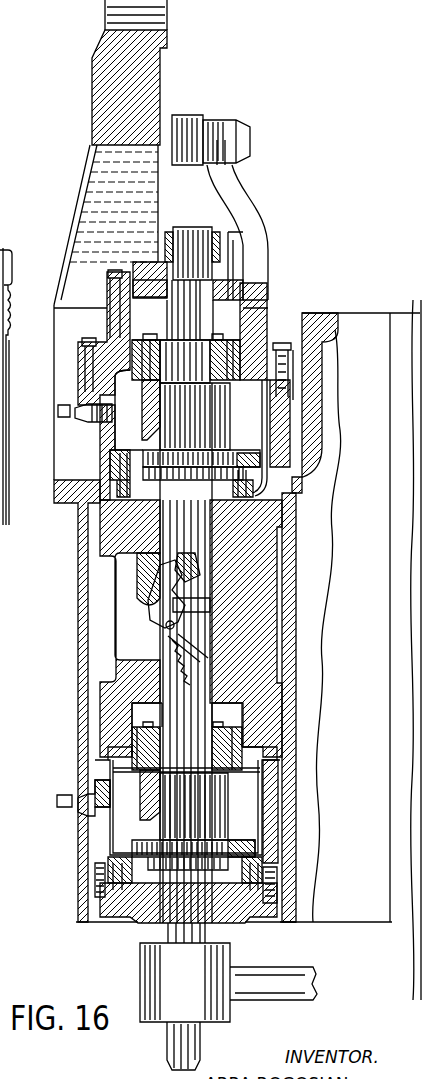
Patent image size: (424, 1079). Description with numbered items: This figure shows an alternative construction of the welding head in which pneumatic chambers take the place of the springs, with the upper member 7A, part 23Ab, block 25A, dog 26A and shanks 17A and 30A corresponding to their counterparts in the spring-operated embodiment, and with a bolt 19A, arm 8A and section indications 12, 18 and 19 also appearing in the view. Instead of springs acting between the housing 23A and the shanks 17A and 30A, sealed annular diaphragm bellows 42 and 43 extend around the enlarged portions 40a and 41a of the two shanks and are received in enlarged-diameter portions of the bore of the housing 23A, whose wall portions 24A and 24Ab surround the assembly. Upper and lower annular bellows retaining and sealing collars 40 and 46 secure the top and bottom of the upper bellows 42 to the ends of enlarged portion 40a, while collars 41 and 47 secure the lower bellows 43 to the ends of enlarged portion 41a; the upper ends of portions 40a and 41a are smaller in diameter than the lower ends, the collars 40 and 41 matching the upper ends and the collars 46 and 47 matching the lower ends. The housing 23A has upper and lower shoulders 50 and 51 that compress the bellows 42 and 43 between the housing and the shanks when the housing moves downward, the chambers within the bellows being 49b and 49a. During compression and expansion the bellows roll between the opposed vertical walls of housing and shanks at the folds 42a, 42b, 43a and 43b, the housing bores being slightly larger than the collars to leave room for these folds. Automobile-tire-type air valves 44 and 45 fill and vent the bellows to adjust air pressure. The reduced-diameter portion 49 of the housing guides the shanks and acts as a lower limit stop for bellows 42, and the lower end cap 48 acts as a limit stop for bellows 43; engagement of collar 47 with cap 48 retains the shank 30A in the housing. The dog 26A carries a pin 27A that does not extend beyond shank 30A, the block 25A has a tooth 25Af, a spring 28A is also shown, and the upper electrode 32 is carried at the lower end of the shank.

The part 7A (counterpart of part 7) 7A is at (148, 78).
The bolt 19A is at (195, 117).
The arm 8A is at (215, 237).
The part 23Ab (counterpart of part 23b) 23Ab is at (258, 233).
The shank 17A is at (230, 277).
The upper annular bellows retaining and sealing collar 40 is at (247, 322).
The upper annular fold 42a is at (262, 340).
The upper shoulder 50 is at (253, 365).
The chamber within the upper bellows 49b is at (250, 400).
The sealed annular diaphragm bellows 42 is at (250, 412).
The enlarged portion of shank 17A 40a is at (203, 430).
The lower annular fold 42b is at (263, 453).
The lower annular bellows retaining and sealing collar 46 is at (333, 485).
The air valve 44 is at (62, 415).
The reduced diameter portion of the housing 49 is at (83, 507).
The section line 18 is at (165, 562).
The section line 19 is at (166, 625).
The pawl tooth 25Af is at (140, 600).
The block 25A is at (152, 607).
The pin 27A is at (168, 626).
The dog 26A is at (197, 613).
The housing 23A is at (123, 702).
The housing 24A is at (78, 733).
The housing wall 24Ab is at (364, 583).
The shank 30A is at (275, 640).
The spring 28A is at (215, 668).
The upper annular fold 43a is at (280, 708).
The upper annular bellows retaining and sealing collar 41 is at (280, 729).
The lower shoulder 51 is at (280, 747).
The sealed annular diaphragm bellows 43 is at (272, 778).
The chamber within the lower bellows 49a is at (265, 820).
The enlarged portion of shank 30A 41a is at (210, 822).
The lower annular fold 43b is at (270, 862).
The lower annular bellows retaining and sealing collar 47 is at (280, 878).
The air valve 45 is at (63, 803).
The lower end cap 48 is at (120, 923).
The upper electrode 32 is at (200, 1040).
The section line 12 is at (17, 357).